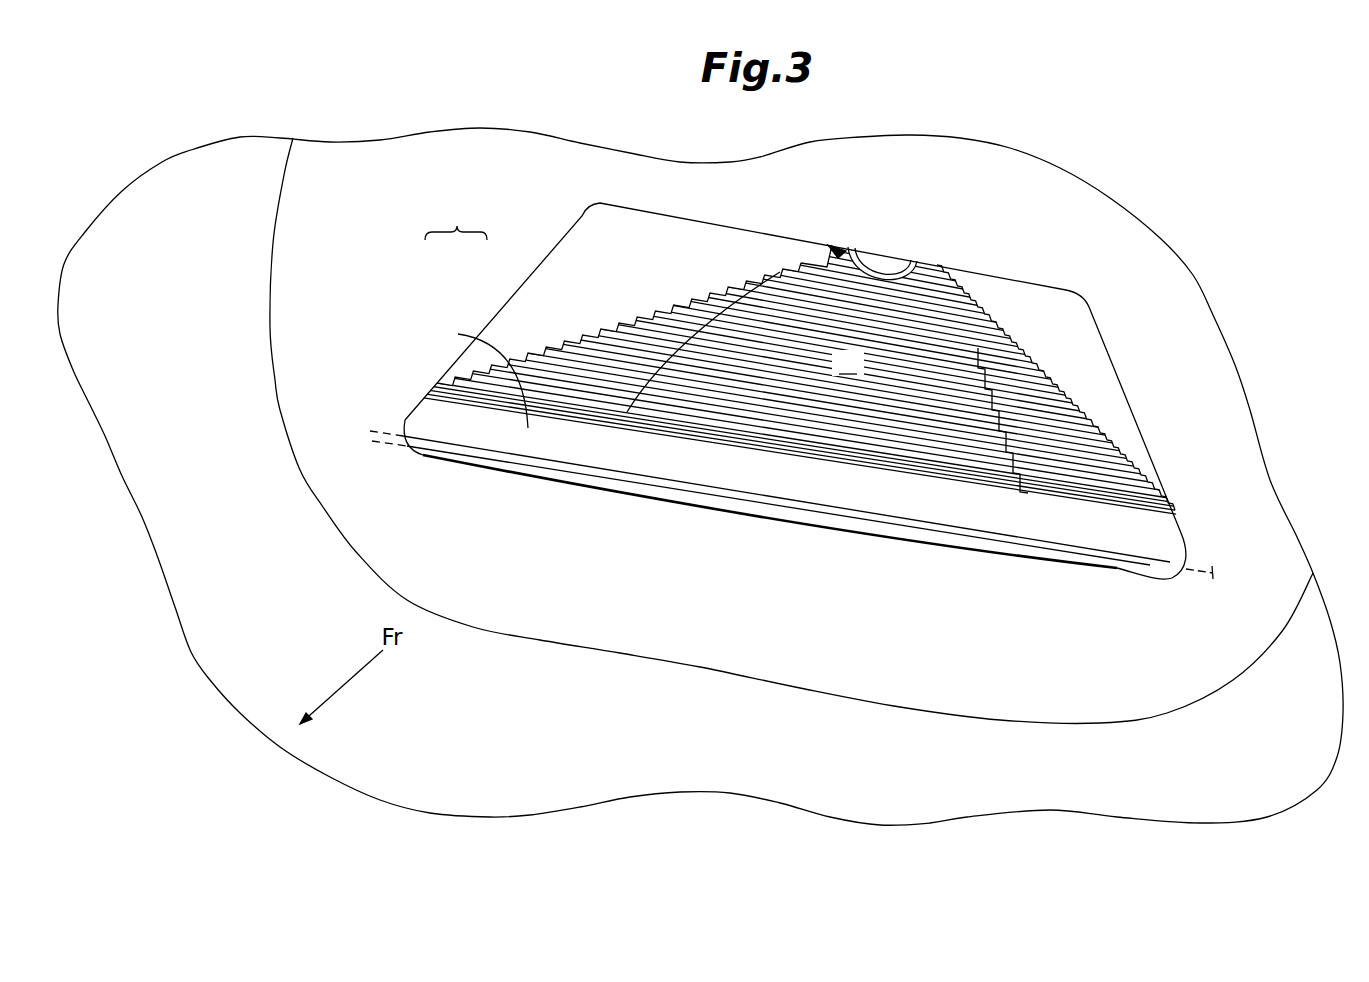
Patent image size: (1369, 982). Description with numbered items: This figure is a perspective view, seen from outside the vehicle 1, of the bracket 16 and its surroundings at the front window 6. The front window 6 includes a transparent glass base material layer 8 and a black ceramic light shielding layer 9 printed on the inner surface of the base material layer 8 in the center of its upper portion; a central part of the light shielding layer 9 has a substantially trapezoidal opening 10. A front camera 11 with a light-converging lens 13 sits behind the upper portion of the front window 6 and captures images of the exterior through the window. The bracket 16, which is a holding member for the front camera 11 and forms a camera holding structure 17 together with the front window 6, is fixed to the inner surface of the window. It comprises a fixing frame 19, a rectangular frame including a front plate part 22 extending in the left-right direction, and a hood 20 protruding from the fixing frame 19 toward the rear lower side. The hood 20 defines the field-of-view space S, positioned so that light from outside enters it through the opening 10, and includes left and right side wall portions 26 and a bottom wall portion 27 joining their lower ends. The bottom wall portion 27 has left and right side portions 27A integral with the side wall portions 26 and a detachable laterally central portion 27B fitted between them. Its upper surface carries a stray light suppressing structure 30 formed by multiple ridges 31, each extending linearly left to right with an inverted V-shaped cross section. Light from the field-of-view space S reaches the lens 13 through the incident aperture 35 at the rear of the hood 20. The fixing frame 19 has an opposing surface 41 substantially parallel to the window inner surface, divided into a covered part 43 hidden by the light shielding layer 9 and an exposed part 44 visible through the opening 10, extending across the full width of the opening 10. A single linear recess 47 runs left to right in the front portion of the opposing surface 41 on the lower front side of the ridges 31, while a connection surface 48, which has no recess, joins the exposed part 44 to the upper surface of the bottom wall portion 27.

The vehicle 1 is at (183, 542).
The front window 6 is at (393, 302).
The base material layer 8 is at (218, 624).
The light shielding layer 9 is at (400, 553).
The opening 10 is at (1117, 555).
The front camera 11 is at (826, 247).
The lens 13 is at (882, 268).
The bracket 16 is at (547, 287).
The camera holding structure 17 is at (456, 219).
The fixing frame 19 is at (443, 428).
The hood 20 is at (1031, 305).
The front plate part 22 is at (670, 493).
The side wall portions 26 is at (590, 252).
The bottom wall portion 27 is at (1013, 393).
The side portions 27A is at (643, 343).
The laterally central portion 27B is at (787, 303).
The stray light suppressing structure 30 is at (958, 343).
The ridges 31 is at (936, 335).
The incident aperture 35 is at (917, 322).
The opposing surface 41 is at (1097, 545).
The covered part 43 is at (1253, 577).
The exposed part 44 is at (884, 530).
The recess 47 is at (833, 510).
The connection surface 48 is at (476, 372).
The field-of-view space S is at (848, 363).